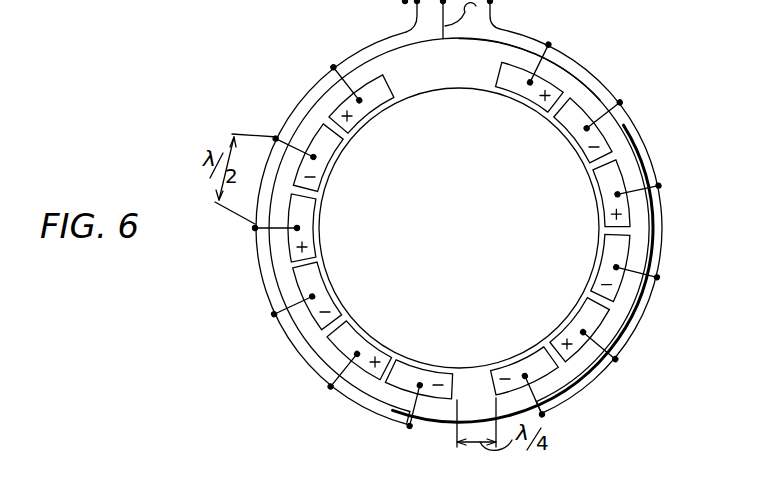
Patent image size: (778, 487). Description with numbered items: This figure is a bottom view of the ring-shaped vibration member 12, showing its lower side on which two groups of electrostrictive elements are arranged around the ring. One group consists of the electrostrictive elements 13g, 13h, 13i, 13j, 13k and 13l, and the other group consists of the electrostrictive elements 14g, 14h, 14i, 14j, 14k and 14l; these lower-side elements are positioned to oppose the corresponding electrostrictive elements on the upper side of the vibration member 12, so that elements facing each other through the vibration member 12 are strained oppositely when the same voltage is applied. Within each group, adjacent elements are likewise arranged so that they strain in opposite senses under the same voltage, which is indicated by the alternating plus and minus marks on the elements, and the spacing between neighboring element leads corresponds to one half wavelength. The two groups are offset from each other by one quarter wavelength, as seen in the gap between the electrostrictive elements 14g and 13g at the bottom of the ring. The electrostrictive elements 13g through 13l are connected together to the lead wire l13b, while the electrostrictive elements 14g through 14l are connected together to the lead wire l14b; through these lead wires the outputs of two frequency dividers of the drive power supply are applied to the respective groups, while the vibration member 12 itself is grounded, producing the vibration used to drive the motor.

The vibration member 12 is at (648, 318).
The electrostrictive element 13g is at (525, 355).
The electrostrictive element 13h is at (580, 313).
The electrostrictive element 13i is at (607, 243).
The electrostrictive element 13j is at (605, 190).
The electrostrictive element 13k is at (580, 137).
The electrostrictive element 13l is at (532, 90).
The electrostrictive element 14g is at (423, 372).
The electrostrictive element 14h is at (373, 345).
The electrostrictive element 14i is at (317, 283).
The electrostrictive element 14j is at (310, 210).
The electrostrictive element 14k is at (322, 165).
The electrostrictive element 14l is at (383, 97).
The lead wire l13b is at (577, 64).
The lead wire l14b is at (268, 283).